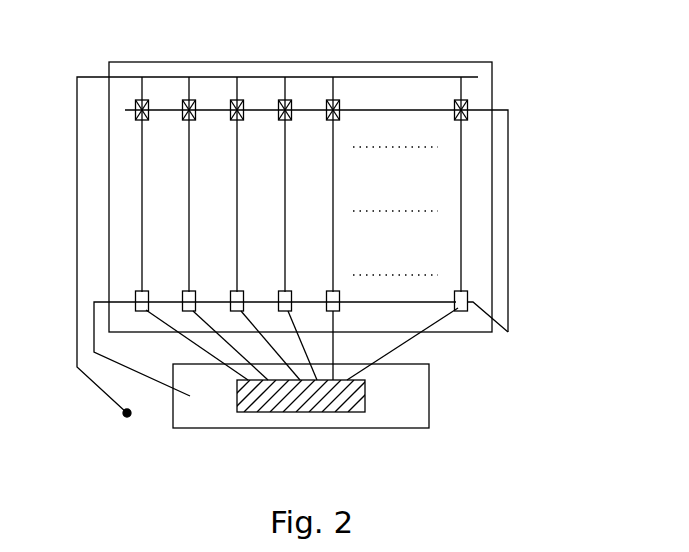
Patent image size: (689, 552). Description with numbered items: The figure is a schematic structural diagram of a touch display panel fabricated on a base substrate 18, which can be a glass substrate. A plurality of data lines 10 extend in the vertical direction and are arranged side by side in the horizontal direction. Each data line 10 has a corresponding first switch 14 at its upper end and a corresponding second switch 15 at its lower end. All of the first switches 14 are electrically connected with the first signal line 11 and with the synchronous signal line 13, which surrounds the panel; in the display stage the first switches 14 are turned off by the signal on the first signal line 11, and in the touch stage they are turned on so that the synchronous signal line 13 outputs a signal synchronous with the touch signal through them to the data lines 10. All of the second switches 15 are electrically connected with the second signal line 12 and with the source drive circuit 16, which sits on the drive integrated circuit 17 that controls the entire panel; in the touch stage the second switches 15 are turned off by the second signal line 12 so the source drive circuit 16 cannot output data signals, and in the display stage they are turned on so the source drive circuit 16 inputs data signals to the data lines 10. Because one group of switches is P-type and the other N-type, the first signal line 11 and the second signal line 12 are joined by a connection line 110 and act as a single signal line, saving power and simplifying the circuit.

The data lines 10 is at (461, 157).
The first signal line 11 is at (508, 252).
The connection line 110 is at (510, 313).
The second signal line 12 is at (120, 363).
The synchronous signal line 13 is at (77, 187).
The first switches 14 is at (463, 102).
The second switches 15 is at (462, 311).
The source drive circuit 16 is at (300, 412).
The drive integrated circuit 17 is at (205, 428).
The base substrate 18 is at (317, 62).